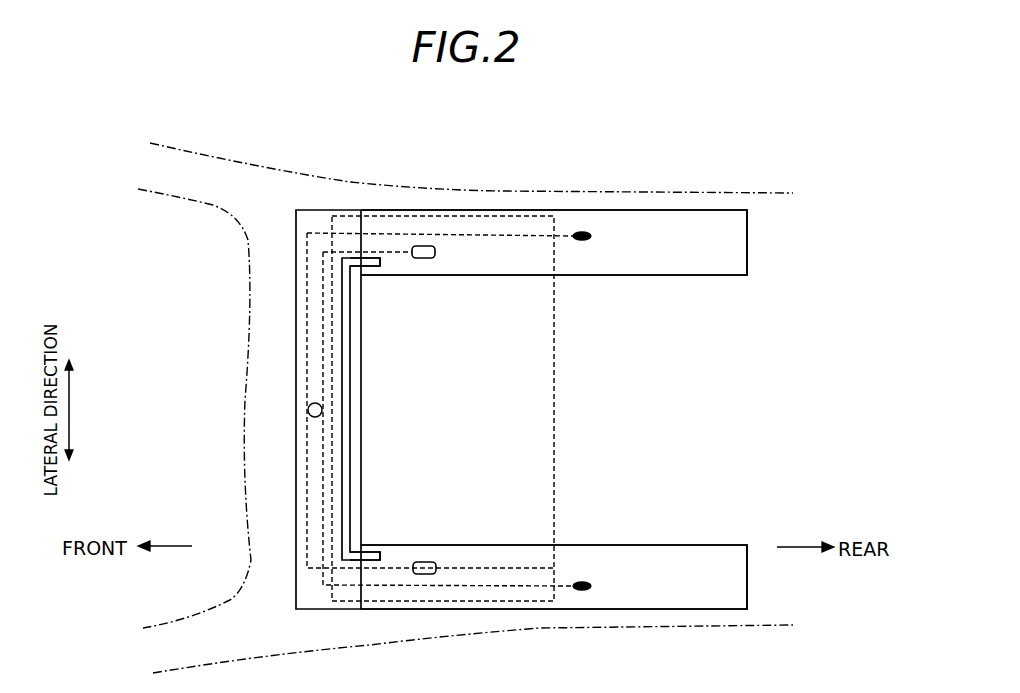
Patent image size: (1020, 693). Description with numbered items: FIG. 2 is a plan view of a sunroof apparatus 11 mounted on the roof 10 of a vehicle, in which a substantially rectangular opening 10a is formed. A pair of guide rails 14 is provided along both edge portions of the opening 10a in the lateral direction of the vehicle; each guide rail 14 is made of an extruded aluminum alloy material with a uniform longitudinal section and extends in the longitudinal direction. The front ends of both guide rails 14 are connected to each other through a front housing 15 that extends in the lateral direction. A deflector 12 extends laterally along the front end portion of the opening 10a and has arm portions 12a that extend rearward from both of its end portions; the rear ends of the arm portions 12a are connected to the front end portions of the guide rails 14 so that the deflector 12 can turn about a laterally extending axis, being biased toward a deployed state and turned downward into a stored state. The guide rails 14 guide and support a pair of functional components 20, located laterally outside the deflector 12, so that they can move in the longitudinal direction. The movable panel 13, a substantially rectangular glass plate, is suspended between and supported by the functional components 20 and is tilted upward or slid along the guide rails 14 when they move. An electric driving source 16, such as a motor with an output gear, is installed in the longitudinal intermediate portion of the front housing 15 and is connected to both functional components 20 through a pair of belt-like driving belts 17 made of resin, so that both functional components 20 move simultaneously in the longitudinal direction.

The roof 10 is at (548, 628).
The opening 10a is at (493, 401).
The sunroof apparatus 11 is at (667, 191).
The deflector 12 is at (360, 352).
The arm portions 12a is at (380, 270).
The movable panel 13 is at (556, 410).
The guide rails 14 is at (503, 210).
The front housing 15 is at (296, 218).
The electric driving source 16 is at (308, 410).
The driving belts 17 is at (307, 483).
The functional components 20 is at (425, 258).